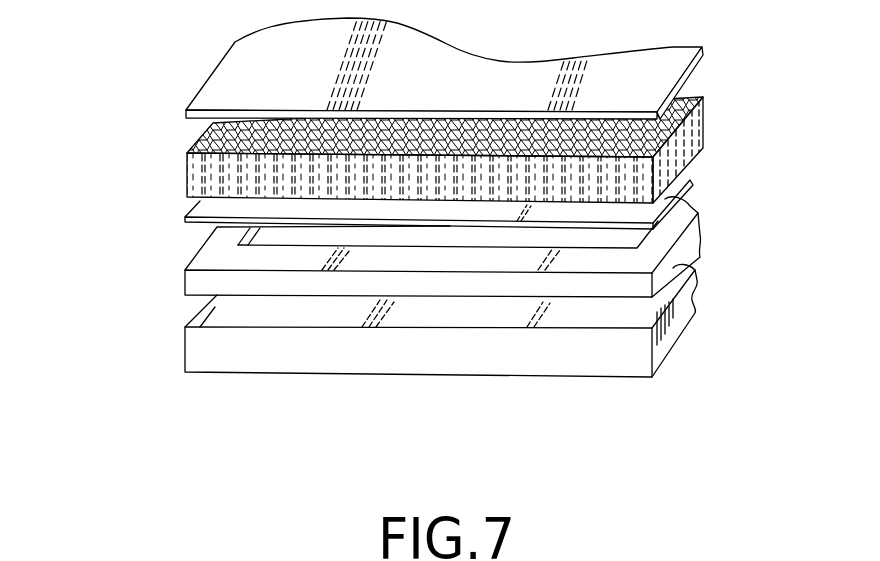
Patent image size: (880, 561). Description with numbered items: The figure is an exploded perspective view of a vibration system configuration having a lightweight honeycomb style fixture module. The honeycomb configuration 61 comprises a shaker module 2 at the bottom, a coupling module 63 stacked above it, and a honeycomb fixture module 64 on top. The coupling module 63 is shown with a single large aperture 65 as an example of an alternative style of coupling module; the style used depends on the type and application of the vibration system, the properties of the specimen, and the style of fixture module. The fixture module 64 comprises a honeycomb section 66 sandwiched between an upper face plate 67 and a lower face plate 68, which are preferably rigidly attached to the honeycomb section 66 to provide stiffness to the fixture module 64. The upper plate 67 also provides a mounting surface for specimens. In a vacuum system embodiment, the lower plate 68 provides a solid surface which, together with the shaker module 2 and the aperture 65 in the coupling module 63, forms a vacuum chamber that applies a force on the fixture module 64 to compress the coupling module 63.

The shaker module 2 is at (183, 353).
The honeycomb configuration 61 is at (442, 199).
The coupling module 63 is at (366, 283).
The honeycomb fixture module 64 is at (446, 132).
The aperture 65 is at (445, 244).
The honeycomb section 66 is at (692, 98).
The upper face plate 67 is at (444, 68).
The lower face plate 68 is at (597, 213).